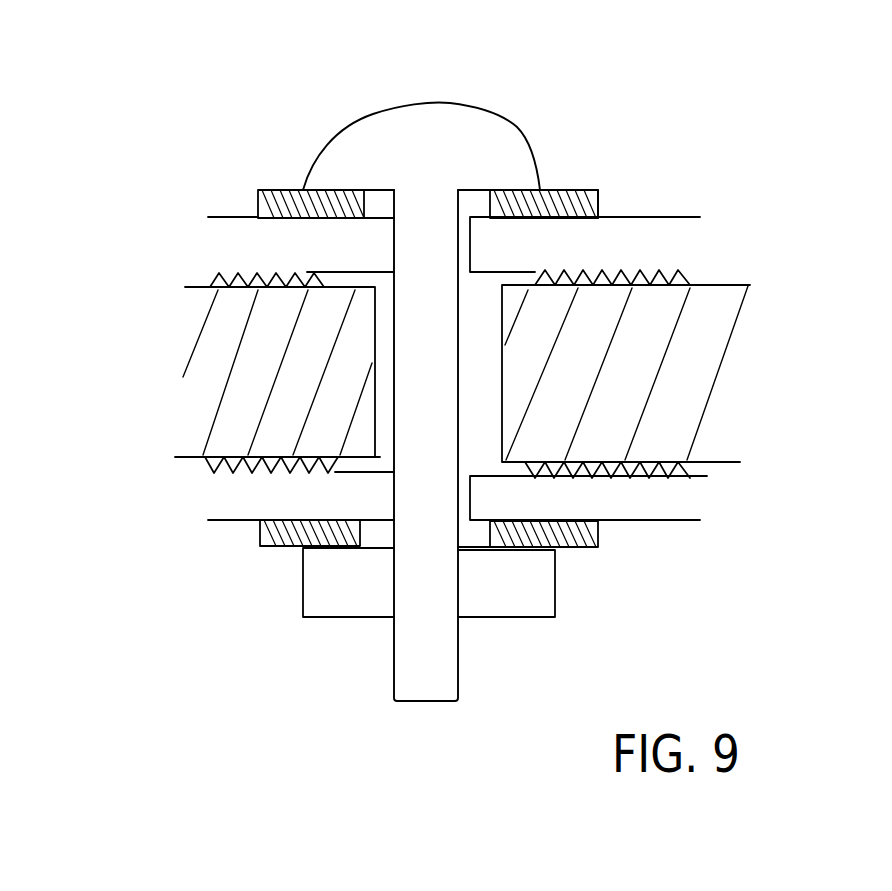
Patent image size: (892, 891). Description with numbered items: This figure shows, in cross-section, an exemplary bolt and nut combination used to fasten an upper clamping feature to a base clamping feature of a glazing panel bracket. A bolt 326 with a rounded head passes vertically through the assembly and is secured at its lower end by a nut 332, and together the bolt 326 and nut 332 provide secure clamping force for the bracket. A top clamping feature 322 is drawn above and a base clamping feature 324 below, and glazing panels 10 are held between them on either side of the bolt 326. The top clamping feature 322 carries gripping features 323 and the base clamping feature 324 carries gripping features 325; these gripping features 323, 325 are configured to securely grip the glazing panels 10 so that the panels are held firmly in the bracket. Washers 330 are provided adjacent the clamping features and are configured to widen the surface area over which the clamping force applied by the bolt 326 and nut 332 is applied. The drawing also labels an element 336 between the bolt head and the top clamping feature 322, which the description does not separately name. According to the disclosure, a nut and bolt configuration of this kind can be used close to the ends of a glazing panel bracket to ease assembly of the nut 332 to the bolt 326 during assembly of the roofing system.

The glazing panel 10 is at (177, 418).
The top clamping feature 322 is at (634, 238).
The gripping feature 323 is at (242, 272).
The base clamping feature 324 is at (630, 505).
The gripping feature 325 is at (235, 475).
The bolt 326 is at (443, 132).
The washer 330 is at (272, 549).
The nut 332 is at (350, 590).
The upper compressible washer 336 is at (562, 185).